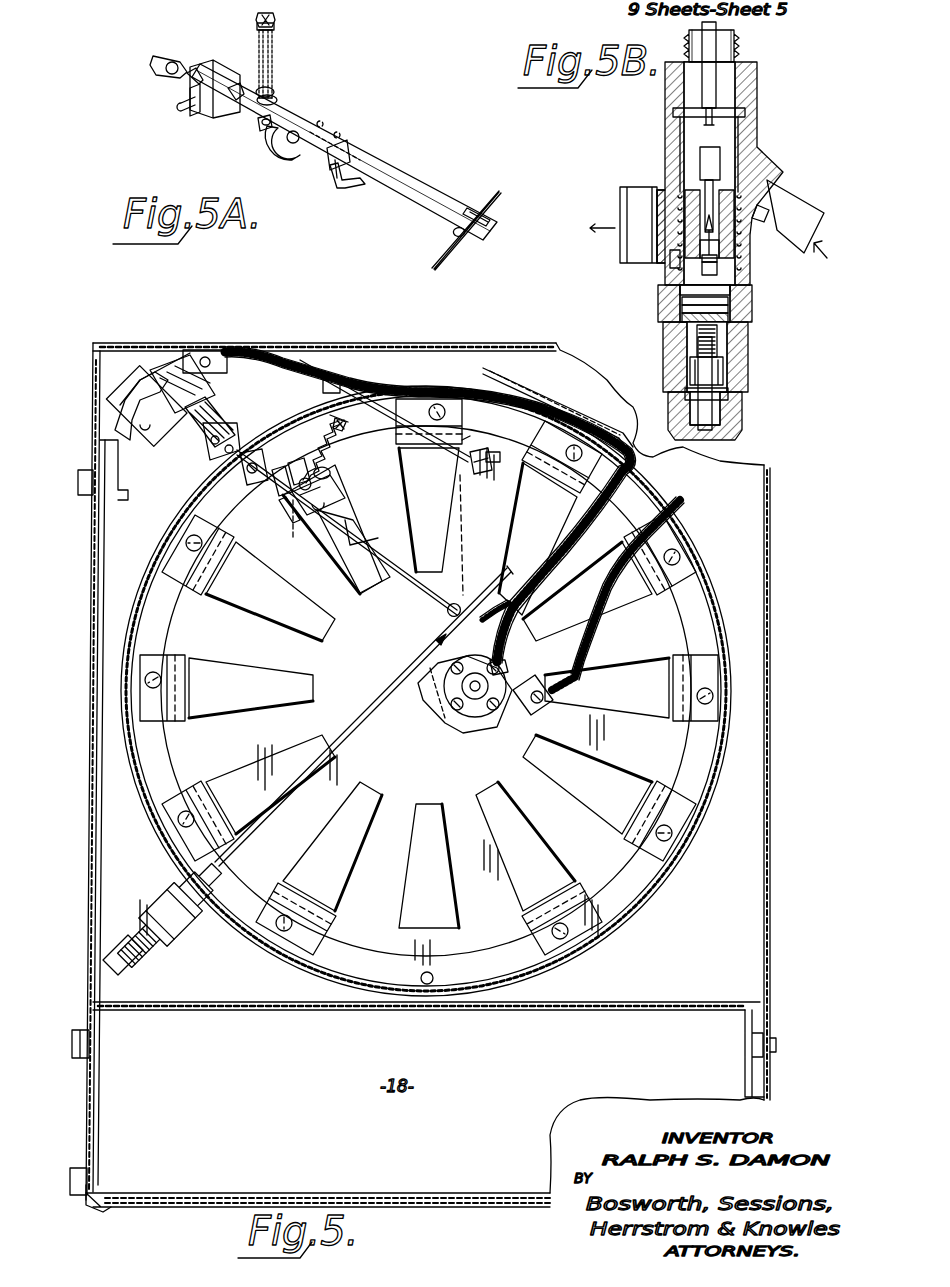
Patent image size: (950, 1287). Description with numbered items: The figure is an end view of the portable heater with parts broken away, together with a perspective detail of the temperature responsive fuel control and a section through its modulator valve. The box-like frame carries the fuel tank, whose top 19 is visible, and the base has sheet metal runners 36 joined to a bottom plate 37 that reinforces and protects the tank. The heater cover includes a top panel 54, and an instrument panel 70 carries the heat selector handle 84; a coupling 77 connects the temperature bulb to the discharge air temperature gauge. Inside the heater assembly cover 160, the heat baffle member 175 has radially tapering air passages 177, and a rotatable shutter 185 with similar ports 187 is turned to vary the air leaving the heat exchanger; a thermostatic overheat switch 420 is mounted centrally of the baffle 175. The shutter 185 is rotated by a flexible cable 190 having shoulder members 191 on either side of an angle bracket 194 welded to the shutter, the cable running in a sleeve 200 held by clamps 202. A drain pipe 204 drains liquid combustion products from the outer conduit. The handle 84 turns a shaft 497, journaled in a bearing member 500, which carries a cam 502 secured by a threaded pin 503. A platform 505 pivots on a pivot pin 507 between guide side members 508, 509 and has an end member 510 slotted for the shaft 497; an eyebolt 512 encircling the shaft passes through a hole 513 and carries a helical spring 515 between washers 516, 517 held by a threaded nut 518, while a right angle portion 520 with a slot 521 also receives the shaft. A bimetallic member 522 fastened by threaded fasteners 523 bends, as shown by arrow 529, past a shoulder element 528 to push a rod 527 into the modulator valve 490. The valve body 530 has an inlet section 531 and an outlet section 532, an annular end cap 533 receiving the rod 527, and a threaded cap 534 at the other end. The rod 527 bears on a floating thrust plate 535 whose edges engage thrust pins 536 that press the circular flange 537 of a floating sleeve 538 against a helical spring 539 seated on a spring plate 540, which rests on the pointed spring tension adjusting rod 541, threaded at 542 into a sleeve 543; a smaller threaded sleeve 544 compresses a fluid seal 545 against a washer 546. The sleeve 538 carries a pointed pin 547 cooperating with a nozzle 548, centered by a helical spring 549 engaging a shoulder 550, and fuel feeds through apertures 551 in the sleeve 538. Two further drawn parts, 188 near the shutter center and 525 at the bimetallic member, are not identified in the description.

In FIG. 5, the tank top 19 is at (205, 1012).
In FIG. 5, the runners 36 is at (105, 1212).
In FIG. 5, the bottom plate 37 is at (190, 1208).
In FIG. 5, the top panel 54 is at (460, 348).
In FIG. 5, the instrument panel 70 is at (130, 428).
In FIG. 5, the coupling 77 is at (595, 642).
In FIG. 5, the heat selector handle 84 is at (120, 405).
In FIG. 5, the heater assembly cover 160 is at (165, 560).
In FIG. 5, the heat baffle member 175 is at (172, 600).
In FIG. 5, the air passages 177 is at (412, 515).
In FIG. 5, the shutter 185 is at (345, 962).
In FIG. 5, the shutter ports 187 is at (226, 778).
In FIG. 5, the hub bracket 188 is at (500, 672).
In FIG. 5, the flexible cable 190 is at (482, 430).
In FIG. 5, the shoulder member 191 is at (470, 462).
In FIG. 5, the angle bracket 194 is at (483, 478).
In FIG. 5, the sleeve 200 is at (360, 378).
In FIG. 5, the clamps 202 is at (345, 360).
In FIG. 5, the drain pipe 204 is at (435, 978).
In FIG. 5, the thermostatic overheat switch 420 is at (470, 712).
In FIG. 5B, the modulator valve 490 is at (652, 99).
In FIG. 5, the modulator valve 490 is at (172, 928).
In FIG. 5A, the shaft 497 is at (190, 66).
In FIG. 5, the shaft 497 is at (195, 412).
In FIG. 5, the bearing member 500 is at (163, 437).
In FIG. 5A, the cam 502 is at (282, 158).
In FIG. 5, the cam 502 is at (300, 515).
In FIG. 5, the threaded pin 503 is at (297, 528).
In FIG. 5A, the platform 505 is at (224, 68).
In FIG. 5A, the pivot pin 507 is at (185, 110).
In FIG. 5, the pivot pin 507 is at (290, 490).
In FIG. 5A, the side member 508 is at (193, 93).
In FIG. 5, the side member 508 is at (237, 472).
In FIG. 5A, the side member 509 is at (240, 103).
In FIG. 5A, the end member 510 is at (178, 75).
In FIG. 5A, the eyebolt 512 is at (258, 128).
In FIG. 5, the eyebolt 512 is at (285, 492).
In FIG. 5A, the hole 513 is at (275, 93).
In FIG. 5, the hole 513 is at (327, 468).
In FIG. 5A, the helical spring 515 is at (274, 60).
In FIG. 5, the helical spring 515 is at (335, 452).
In FIG. 5A, the outer washer 516 is at (277, 27).
In FIG. 5, the outer washer 516 is at (335, 417).
In FIG. 5A, the washer 517 is at (279, 100).
In FIG. 5, the washer 517 is at (312, 485).
In FIG. 5A, the threaded nut 518 is at (278, 16).
In FIG. 5, the threaded nut 518 is at (347, 423).
In FIG. 5A, the right angle portion 520 is at (337, 186).
In FIG. 5, the right angle portion 520 is at (337, 565).
In FIG. 5A, the slot 521 is at (338, 158).
In FIG. 5A, the bimetallic member 522 is at (413, 183).
In FIG. 5A, the threaded fasteners 523 is at (340, 136).
In FIG. 5A, the inlet tube 525 is at (490, 220).
In FIG. 5B, the inlet tube 525 is at (596, 225).
In FIG. 5A, the rod 527 is at (443, 265).
In FIG. 5B, the rod 527 is at (707, 32).
In FIG. 5, the rod 527 is at (350, 733).
In FIG. 5A, the shoulder element 528 is at (456, 235).
In FIG. 5, the shoulder element 528 is at (447, 611).
In FIG. 5, the arrow 529 is at (483, 618).
In FIG. 5B, the valve body 530 is at (747, 100).
In FIG. 5B, the inlet conduit section 531 is at (762, 185).
In FIG. 5B, the outlet conduit section 532 is at (650, 188).
In FIG. 5B, the annular end cap 533 is at (740, 60).
In FIG. 5B, the threaded cap 534 is at (732, 436).
In FIG. 5, the threaded cap 534 is at (118, 992).
In FIG. 5B, the thrust plate 535 is at (736, 108).
In FIG. 5B, the thrust pins 536 is at (718, 165).
In FIG. 5B, the circular flange 537 is at (690, 210).
In FIG. 5B, the floating sleeve 538 is at (720, 225).
In FIG. 5B, the helical spring 539 is at (670, 301).
In FIG. 5B, the spring plate 540 is at (670, 317).
In FIG. 5B, the spring tension adjusting rod 541 is at (702, 415).
In FIG. 5B, the threads 542 is at (745, 346).
In FIG. 5B, the sleeve 543 is at (668, 292).
In FIG. 5B, the smaller threaded sleeve 544 is at (718, 394).
In FIG. 5B, the fluid seal 545 is at (678, 365).
In FIG. 5B, the washer 546 is at (738, 360).
In FIG. 5B, the pointed pin 547 is at (695, 238).
In FIG. 5B, the nozzle 548 is at (680, 215).
In FIG. 5B, the helical spring 549 is at (722, 292).
In FIG. 5B, the shoulder 550 is at (720, 309).
In FIG. 5B, the apertures 551 is at (660, 254).